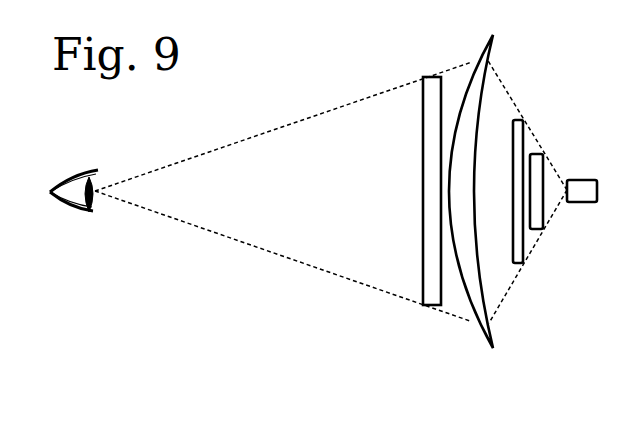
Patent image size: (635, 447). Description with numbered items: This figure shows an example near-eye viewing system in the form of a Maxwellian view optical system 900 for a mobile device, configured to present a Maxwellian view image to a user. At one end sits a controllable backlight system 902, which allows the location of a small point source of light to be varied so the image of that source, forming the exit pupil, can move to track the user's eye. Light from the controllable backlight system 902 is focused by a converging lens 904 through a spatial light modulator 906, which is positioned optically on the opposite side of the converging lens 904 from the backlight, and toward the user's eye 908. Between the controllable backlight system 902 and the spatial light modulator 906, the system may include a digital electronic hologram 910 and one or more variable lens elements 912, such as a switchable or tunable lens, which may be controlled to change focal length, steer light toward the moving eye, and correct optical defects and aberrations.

The Maxwellian view optical system 900 is at (531, 62).
The controllable backlight system 902 is at (583, 180).
The converging lens 904 is at (488, 327).
The spatial light modulator 906 is at (423, 199).
The user's eye 908 is at (78, 177).
The digital electronic hologram 910 is at (540, 229).
The variable lens element 912 is at (520, 118).